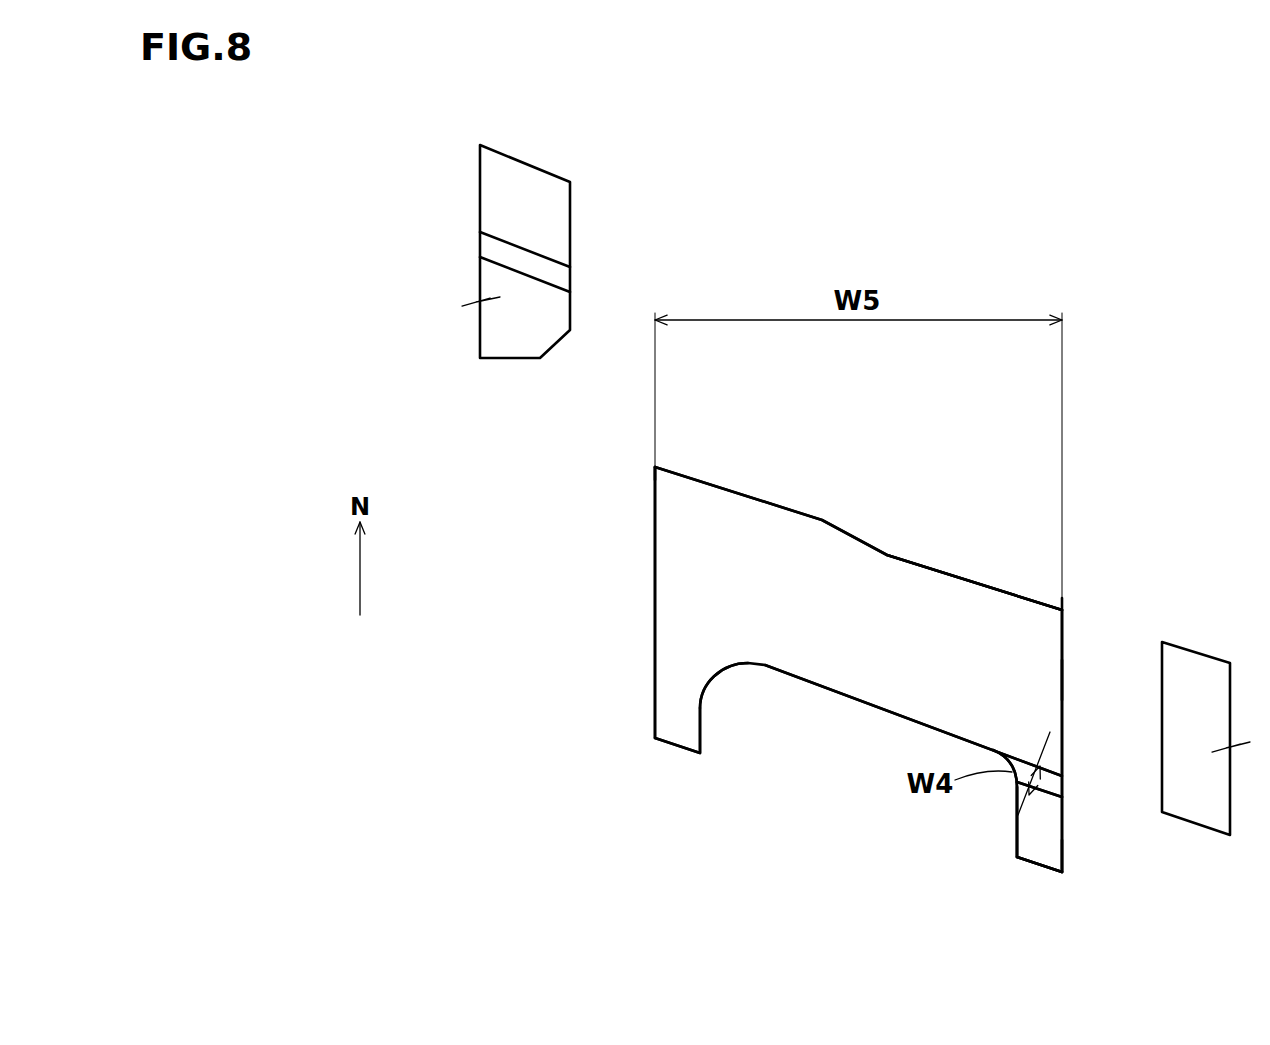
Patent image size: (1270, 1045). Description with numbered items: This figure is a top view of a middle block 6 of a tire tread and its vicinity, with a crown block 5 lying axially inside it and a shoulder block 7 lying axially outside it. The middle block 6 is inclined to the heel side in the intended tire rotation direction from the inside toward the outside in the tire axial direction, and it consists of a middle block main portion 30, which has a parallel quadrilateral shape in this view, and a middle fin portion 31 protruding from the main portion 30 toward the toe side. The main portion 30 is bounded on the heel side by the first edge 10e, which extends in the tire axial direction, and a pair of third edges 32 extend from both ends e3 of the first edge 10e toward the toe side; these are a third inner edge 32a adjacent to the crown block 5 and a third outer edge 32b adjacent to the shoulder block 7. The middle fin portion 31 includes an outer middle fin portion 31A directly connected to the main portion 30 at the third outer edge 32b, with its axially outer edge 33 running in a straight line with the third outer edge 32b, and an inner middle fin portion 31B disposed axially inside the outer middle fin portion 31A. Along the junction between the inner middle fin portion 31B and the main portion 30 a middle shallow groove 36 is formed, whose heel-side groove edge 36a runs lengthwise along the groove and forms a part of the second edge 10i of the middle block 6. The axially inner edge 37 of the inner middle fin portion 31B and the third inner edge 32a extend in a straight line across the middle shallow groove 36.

The crown block 5 is at (1214, 642).
The middle block 6 is at (753, 470).
The shoulder block 7 is at (590, 222).
The middle block main portion 30 is at (800, 555).
The first edge 10e is at (935, 570).
The second edge 10i is at (867, 705).
The ends of the first edge e3 is at (653, 468).
The third edges 32 is at (1086, 648).
The third inner edge 32a is at (1063, 682).
The third outer edge 32b is at (655, 595).
The axially outer edge 33 is at (653, 695).
The middle fin portion 31 is at (1003, 837).
The outer middle fin portion 31A is at (682, 708).
The inner middle fin portion 31B is at (1042, 835).
The middle shallow groove 36 is at (982, 797).
The heel-side groove edge 36a is at (1050, 773).
The axially inner edge 37 is at (1063, 847).